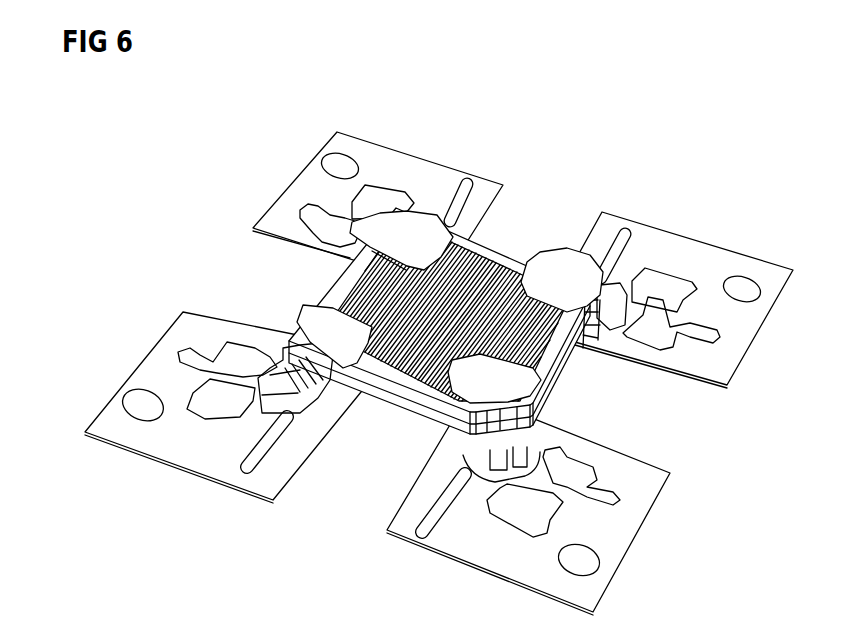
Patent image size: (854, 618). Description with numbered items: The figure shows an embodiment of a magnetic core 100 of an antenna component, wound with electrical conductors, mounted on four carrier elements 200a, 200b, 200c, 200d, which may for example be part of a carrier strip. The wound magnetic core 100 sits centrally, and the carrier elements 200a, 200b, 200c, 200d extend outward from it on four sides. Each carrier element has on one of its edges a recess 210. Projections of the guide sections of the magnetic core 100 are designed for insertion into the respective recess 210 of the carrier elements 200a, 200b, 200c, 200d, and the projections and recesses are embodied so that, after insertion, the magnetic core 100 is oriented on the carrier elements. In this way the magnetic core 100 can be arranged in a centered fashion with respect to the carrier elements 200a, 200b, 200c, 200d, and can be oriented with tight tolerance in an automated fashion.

The magnetic core 100 is at (534, 225).
The recess 210 is at (333, 273).
The carrier element 200a is at (630, 562).
The carrier element 200b is at (720, 240).
The carrier element 200c is at (410, 143).
The carrier element 200d is at (122, 358).